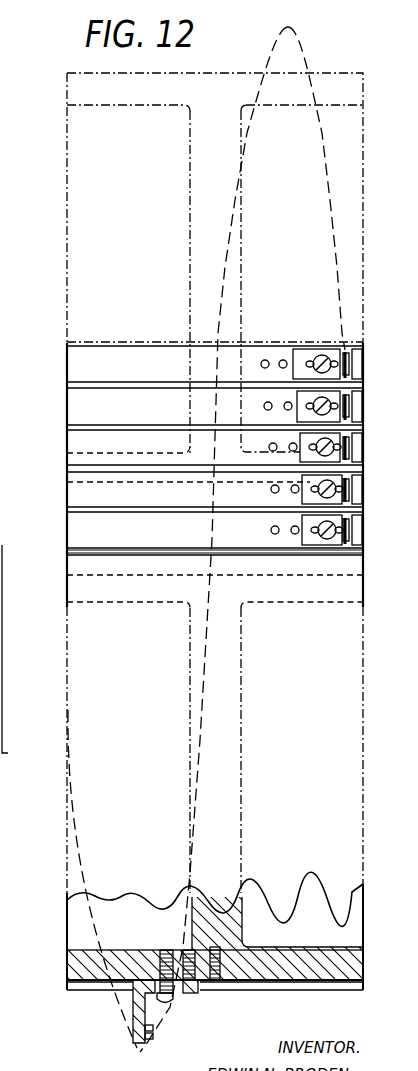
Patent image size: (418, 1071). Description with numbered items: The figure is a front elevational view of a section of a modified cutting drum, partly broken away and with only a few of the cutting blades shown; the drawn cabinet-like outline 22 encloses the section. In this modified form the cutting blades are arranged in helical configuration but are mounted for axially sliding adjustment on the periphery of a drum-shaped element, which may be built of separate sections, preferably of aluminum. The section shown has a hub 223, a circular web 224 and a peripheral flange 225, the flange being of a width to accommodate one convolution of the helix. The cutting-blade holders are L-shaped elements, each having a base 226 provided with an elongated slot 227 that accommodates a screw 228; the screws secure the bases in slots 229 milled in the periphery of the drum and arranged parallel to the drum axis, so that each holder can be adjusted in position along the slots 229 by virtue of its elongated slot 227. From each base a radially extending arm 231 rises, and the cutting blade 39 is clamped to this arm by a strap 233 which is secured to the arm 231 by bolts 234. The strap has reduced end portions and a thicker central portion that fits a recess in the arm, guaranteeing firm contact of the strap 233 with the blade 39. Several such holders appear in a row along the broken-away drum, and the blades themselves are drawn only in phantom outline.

The housing 22 is at (60, 182).
The cutting blade 39 is at (352, 357).
The hub 223 is at (82, 482).
The circular web 224 is at (240, 780).
The peripheral flange 225 is at (67, 958).
The base 226 is at (312, 436).
The elongated slot 227 is at (312, 400).
The screw 228 is at (308, 365).
The slot 229 is at (70, 364).
The radially extending arm 231 is at (353, 368).
The strap 233 is at (352, 440).
The bolt 234 is at (338, 345).